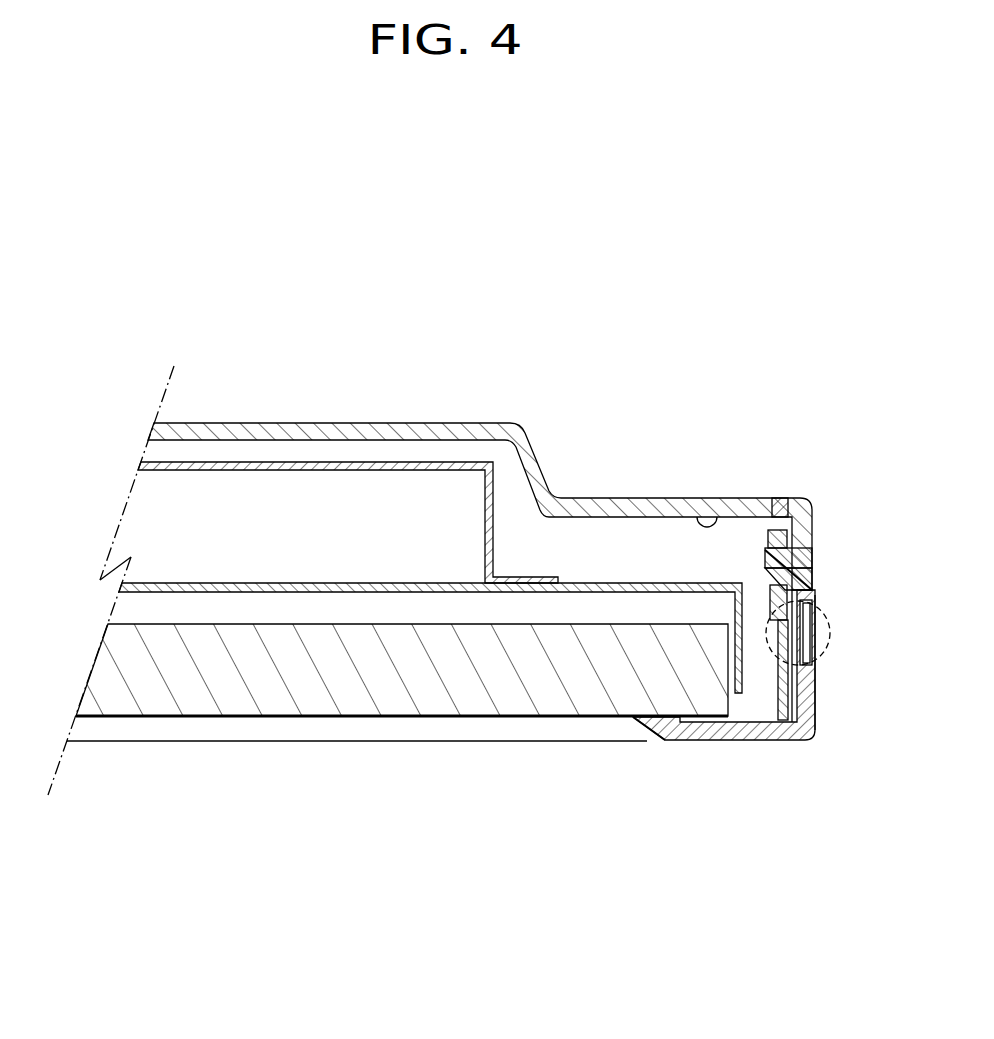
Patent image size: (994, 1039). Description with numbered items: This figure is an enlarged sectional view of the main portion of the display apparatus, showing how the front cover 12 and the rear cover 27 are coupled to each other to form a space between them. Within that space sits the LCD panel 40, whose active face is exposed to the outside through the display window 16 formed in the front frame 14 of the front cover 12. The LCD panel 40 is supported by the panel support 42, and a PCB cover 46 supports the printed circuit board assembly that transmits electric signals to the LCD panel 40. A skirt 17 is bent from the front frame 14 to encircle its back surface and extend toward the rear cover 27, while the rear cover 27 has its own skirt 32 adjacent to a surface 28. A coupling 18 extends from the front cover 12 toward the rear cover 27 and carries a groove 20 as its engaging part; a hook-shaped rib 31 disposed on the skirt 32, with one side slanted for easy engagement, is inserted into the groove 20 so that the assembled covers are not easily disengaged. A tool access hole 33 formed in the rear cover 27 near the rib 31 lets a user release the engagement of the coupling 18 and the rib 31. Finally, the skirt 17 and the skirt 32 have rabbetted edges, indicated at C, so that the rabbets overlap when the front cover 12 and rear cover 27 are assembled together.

The front cover 12 is at (749, 722).
The front frame 14 is at (728, 740).
The display window 16 is at (633, 722).
The skirt 17 is at (816, 728).
The coupling 18 is at (815, 688).
The groove 20 is at (770, 562).
The rear cover 27 is at (670, 498).
The surface 28 is at (715, 517).
The rib 31 is at (813, 563).
The skirt 32 is at (813, 586).
The tool access hole 33 is at (772, 498).
The LCD panel 40 is at (310, 708).
The panel support 42 is at (257, 583).
The PCB cover 46 is at (402, 465).
The rabbetted edges C is at (830, 632).